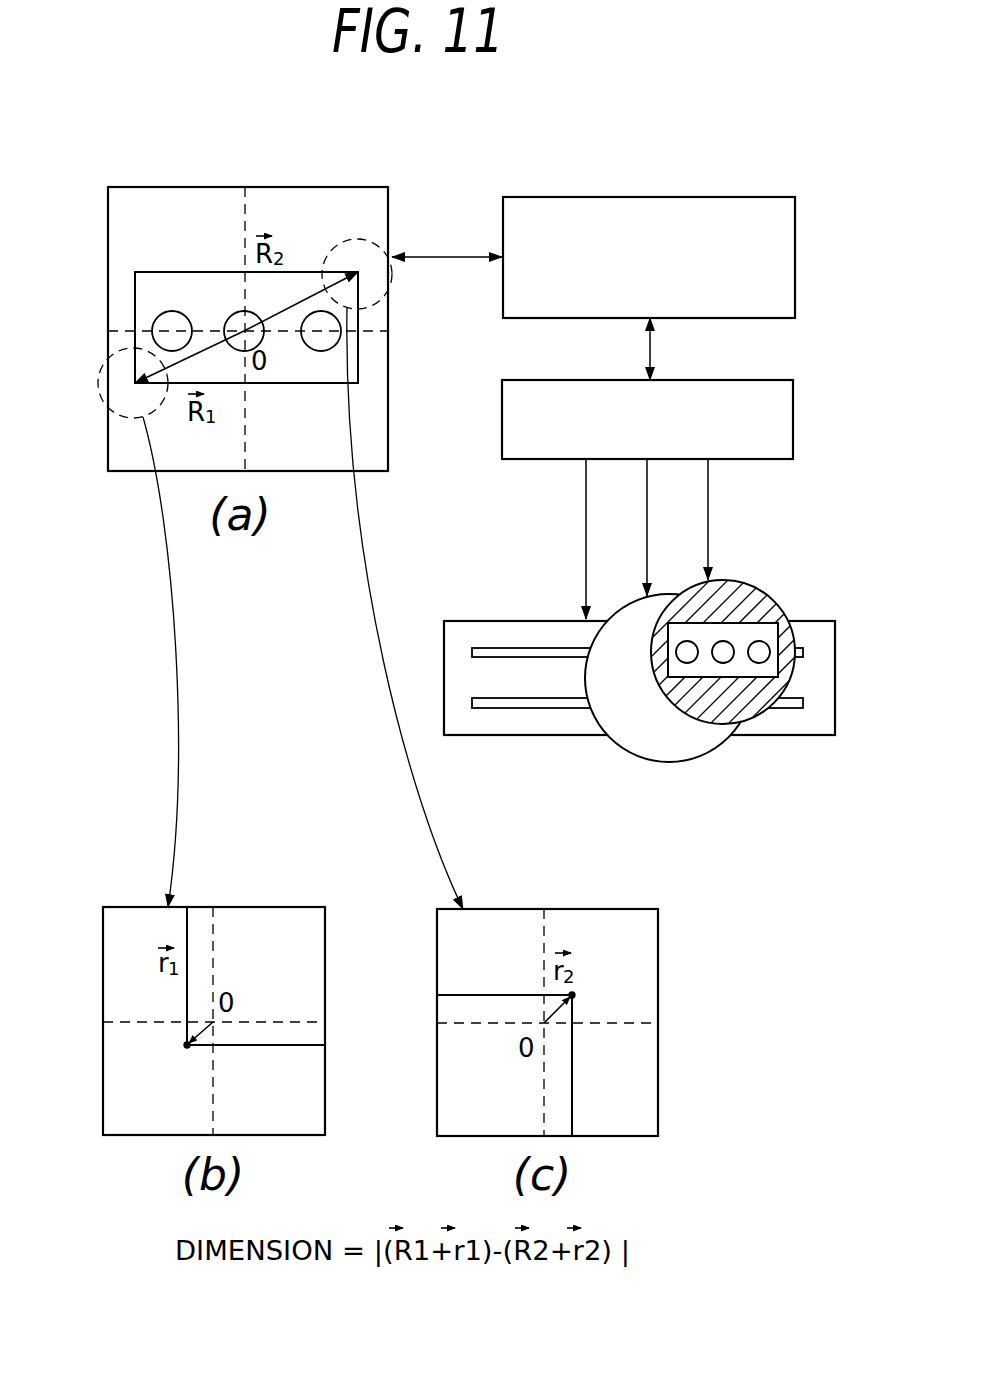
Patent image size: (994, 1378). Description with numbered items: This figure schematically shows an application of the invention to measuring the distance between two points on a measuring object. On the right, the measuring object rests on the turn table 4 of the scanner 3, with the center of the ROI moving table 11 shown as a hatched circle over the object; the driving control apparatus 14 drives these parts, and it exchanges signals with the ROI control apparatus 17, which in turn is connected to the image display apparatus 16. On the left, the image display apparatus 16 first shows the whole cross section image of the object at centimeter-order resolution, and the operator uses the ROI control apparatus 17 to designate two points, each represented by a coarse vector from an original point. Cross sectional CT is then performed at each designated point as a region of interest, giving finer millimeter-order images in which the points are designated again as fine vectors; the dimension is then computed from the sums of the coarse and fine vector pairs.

The image display apparatus 16 is at (108, 218).
The ROI control apparatus 17 is at (797, 233).
The driving control apparatus 14 is at (795, 404).
The scanner 3 is at (815, 723).
The turn table 4 is at (670, 743).
The center of the ROI moving table 11 is at (742, 590).